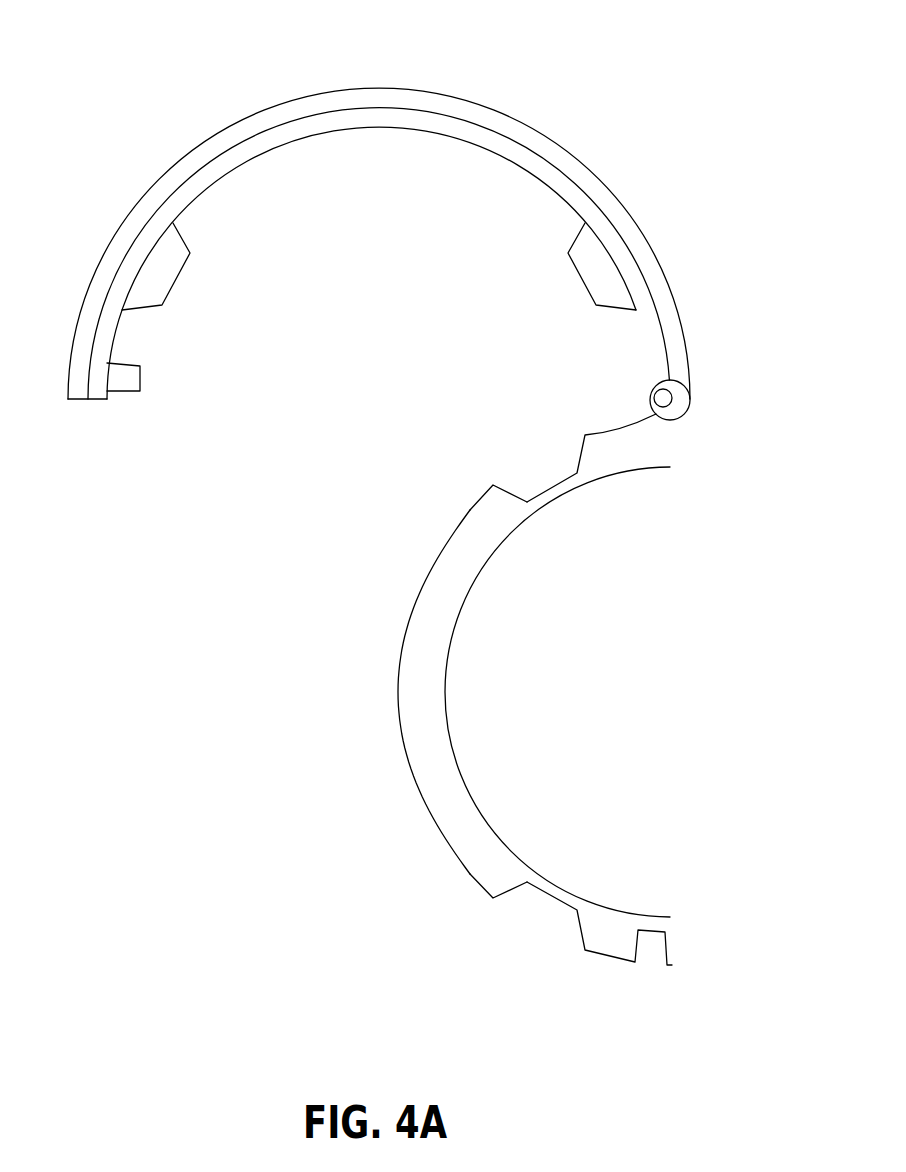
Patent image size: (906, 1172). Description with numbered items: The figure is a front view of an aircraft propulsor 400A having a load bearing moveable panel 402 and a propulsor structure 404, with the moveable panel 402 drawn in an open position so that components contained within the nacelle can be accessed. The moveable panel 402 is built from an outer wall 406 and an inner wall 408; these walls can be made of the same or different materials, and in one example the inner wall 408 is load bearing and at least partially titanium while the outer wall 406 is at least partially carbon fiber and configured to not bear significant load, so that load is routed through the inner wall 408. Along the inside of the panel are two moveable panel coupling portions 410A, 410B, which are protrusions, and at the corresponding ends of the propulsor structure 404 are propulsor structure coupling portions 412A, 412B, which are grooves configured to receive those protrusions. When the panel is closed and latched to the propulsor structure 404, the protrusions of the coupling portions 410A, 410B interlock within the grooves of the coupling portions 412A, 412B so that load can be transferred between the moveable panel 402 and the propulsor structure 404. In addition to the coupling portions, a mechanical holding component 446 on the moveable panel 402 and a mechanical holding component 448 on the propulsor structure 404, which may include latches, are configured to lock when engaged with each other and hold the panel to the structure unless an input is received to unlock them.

The aircraft propulsor 400A is at (181, 71).
The moveable panel 402 is at (654, 250).
The propulsor structure 404 is at (519, 525).
The outer wall 406 is at (380, 88).
The inner wall 408 is at (370, 127).
The moveable panel coupling portion 410A is at (583, 283).
The moveable panel coupling portion 410B is at (174, 278).
The propulsor structure coupling portion 412A is at (543, 472).
The propulsor structure coupling portion 412B is at (550, 915).
The mechanical holding component 446 is at (126, 393).
The mechanical holding component 448 is at (672, 950).